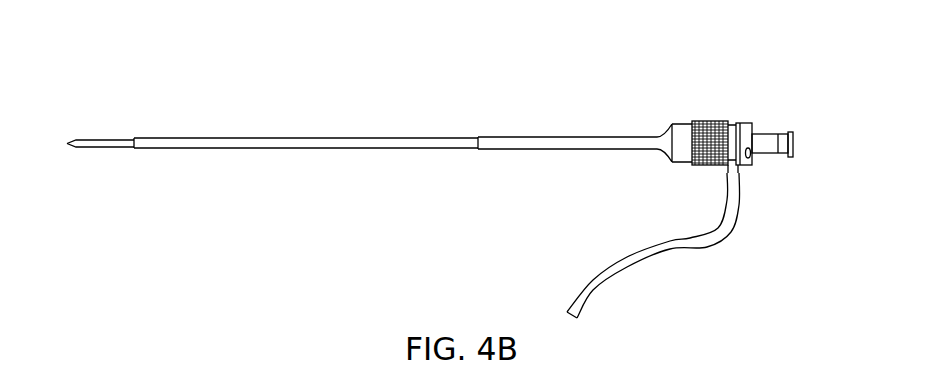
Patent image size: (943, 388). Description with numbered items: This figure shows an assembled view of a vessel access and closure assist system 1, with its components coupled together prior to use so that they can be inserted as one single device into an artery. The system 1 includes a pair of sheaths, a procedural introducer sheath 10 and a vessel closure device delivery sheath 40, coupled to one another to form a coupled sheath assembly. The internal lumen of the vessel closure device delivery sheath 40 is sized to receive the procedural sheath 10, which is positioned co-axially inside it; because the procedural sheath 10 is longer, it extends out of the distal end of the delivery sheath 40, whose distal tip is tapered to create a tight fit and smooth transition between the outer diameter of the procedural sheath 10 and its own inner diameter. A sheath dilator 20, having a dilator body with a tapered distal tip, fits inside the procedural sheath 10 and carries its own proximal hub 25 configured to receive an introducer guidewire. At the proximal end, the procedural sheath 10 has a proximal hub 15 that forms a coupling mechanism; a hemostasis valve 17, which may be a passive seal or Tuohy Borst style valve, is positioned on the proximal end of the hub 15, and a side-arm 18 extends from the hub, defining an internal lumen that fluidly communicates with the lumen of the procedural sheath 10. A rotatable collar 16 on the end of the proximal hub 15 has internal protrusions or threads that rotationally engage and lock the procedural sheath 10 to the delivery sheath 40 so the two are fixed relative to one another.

The vessel access and closure assist system 1 is at (553, 28).
The procedural introducer sheath 10 is at (333, 124).
The proximal hub 15 is at (815, 55).
The rotatable collar 16 is at (710, 121).
The hemostasis valve 17 is at (748, 166).
The side-arm 18 is at (671, 250).
The sheath dilator 20 is at (85, 122).
The proximal hub 25 is at (770, 134).
The vessel closure device delivery sheath 40 is at (612, 124).